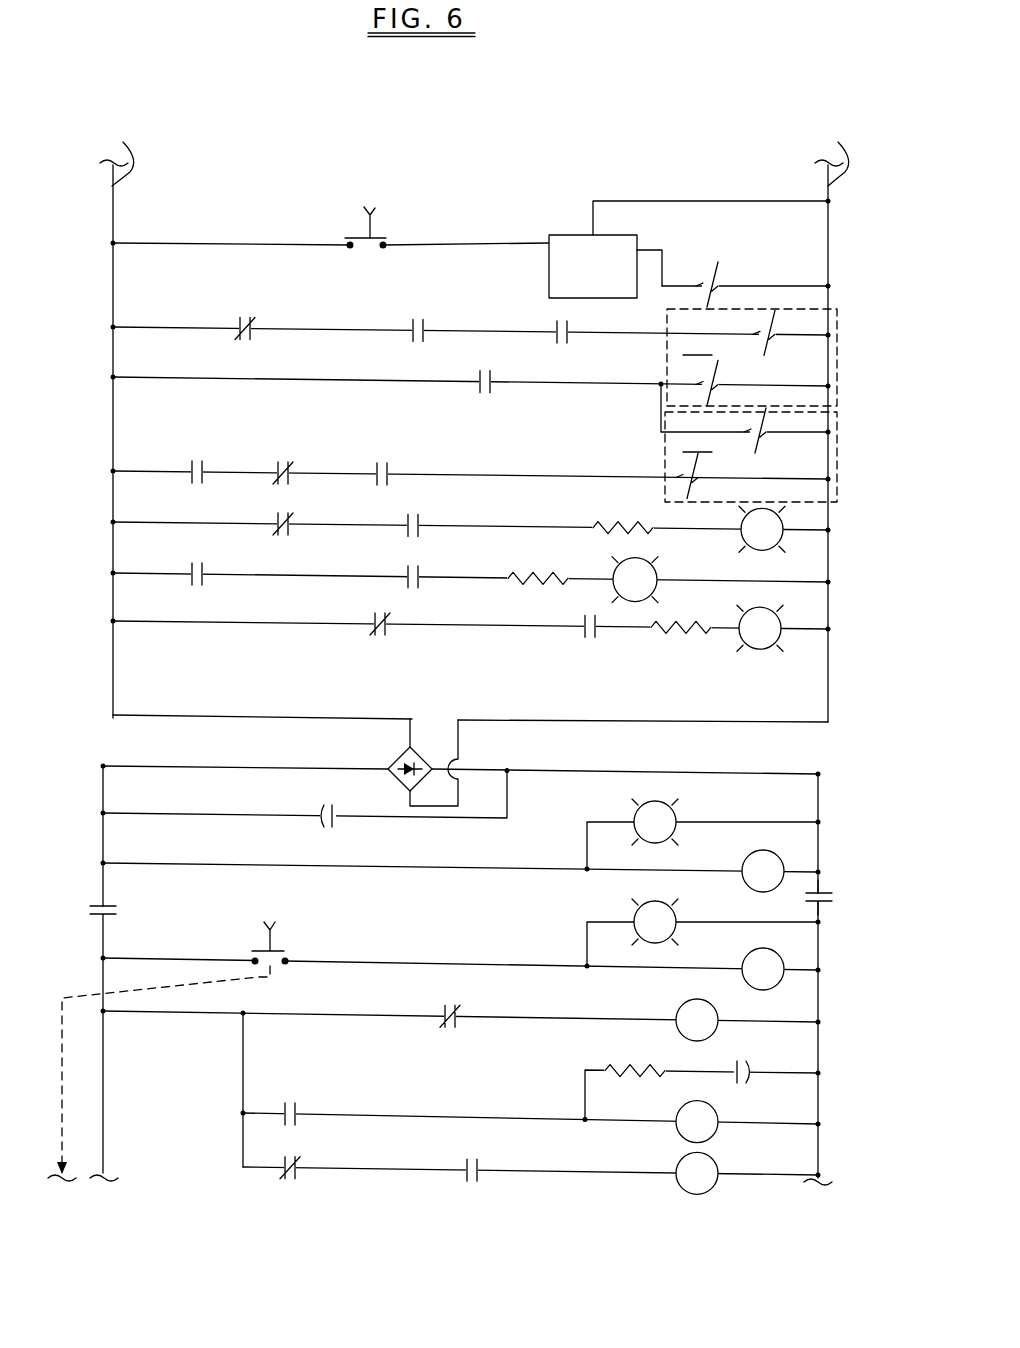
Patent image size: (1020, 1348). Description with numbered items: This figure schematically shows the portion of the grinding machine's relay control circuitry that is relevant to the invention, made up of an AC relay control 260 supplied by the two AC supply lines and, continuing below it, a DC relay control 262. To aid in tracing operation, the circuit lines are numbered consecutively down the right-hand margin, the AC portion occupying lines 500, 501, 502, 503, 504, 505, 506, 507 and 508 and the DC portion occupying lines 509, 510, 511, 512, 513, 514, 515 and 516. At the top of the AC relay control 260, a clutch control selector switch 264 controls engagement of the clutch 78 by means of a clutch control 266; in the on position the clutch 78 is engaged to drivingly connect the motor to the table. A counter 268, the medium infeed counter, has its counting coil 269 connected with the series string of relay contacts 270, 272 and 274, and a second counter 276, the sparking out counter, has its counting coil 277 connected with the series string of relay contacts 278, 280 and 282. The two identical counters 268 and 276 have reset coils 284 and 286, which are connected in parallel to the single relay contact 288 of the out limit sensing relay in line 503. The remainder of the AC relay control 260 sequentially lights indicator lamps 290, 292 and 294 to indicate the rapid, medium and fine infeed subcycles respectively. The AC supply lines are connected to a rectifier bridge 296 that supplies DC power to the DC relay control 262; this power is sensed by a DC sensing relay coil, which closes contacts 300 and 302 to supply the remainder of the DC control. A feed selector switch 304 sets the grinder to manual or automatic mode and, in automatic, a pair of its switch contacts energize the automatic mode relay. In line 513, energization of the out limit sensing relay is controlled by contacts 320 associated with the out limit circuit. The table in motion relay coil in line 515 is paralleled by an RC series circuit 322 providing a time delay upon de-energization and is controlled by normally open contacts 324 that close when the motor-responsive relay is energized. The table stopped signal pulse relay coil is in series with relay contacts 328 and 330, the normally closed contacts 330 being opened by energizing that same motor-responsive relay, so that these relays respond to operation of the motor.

The AC relay control 260 is at (90, 522).
The DC relay control 262 is at (80, 815).
The clutch control selector switch 264 is at (376, 237).
The clutch control 266 is at (612, 235).
The clutch 78 is at (720, 274).
The relay contacts 270 is at (256, 323).
The relay contacts 272 is at (428, 325).
The relay contacts 274 is at (572, 327).
The relay contact 288 is at (495, 376).
The counter 268 is at (667, 355).
The counting coil 269 is at (771, 350).
The reset coil 284 is at (718, 374).
The reset coil 286 is at (762, 450).
The second counter 276 is at (665, 453).
The counting coil 277 is at (699, 467).
The relay contacts 278 is at (188, 466).
The relay contacts 280 is at (292, 468).
The relay contacts 282 is at (392, 469).
The indicator lamp 290 is at (738, 526).
The indicator lamp 292 is at (657, 572).
The indicator lamp 294 is at (740, 641).
The rectifier bridge 296 is at (386, 758).
The contact 300 is at (108, 906).
The contact 302 is at (825, 904).
The feed selector switch 304 is at (277, 950).
The contacts 320 is at (458, 1013).
The RC series circuit 322 is at (663, 1052).
The normally open contacts 324 is at (300, 1109).
The relay contacts 328 is at (482, 1166).
The normally closed contacts 330 is at (300, 1163).
The line 500 is at (499, 229).
The line 501 is at (774, 286).
The line 502 is at (499, 336).
The line 503 is at (499, 387).
The line 504 is at (773, 414).
The line 505 is at (499, 481).
The line 506 is at (499, 520).
The line 507 is at (499, 571).
The line 508 is at (499, 617).
The line 509 is at (490, 789).
The line 510 is at (490, 871).
The line 511 is at (854, 897).
The line 512 is at (490, 969).
The line 513 is at (487, 1020).
The line 514 is at (728, 1091).
The line 515 is at (557, 1122).
The line 516 is at (557, 1173).